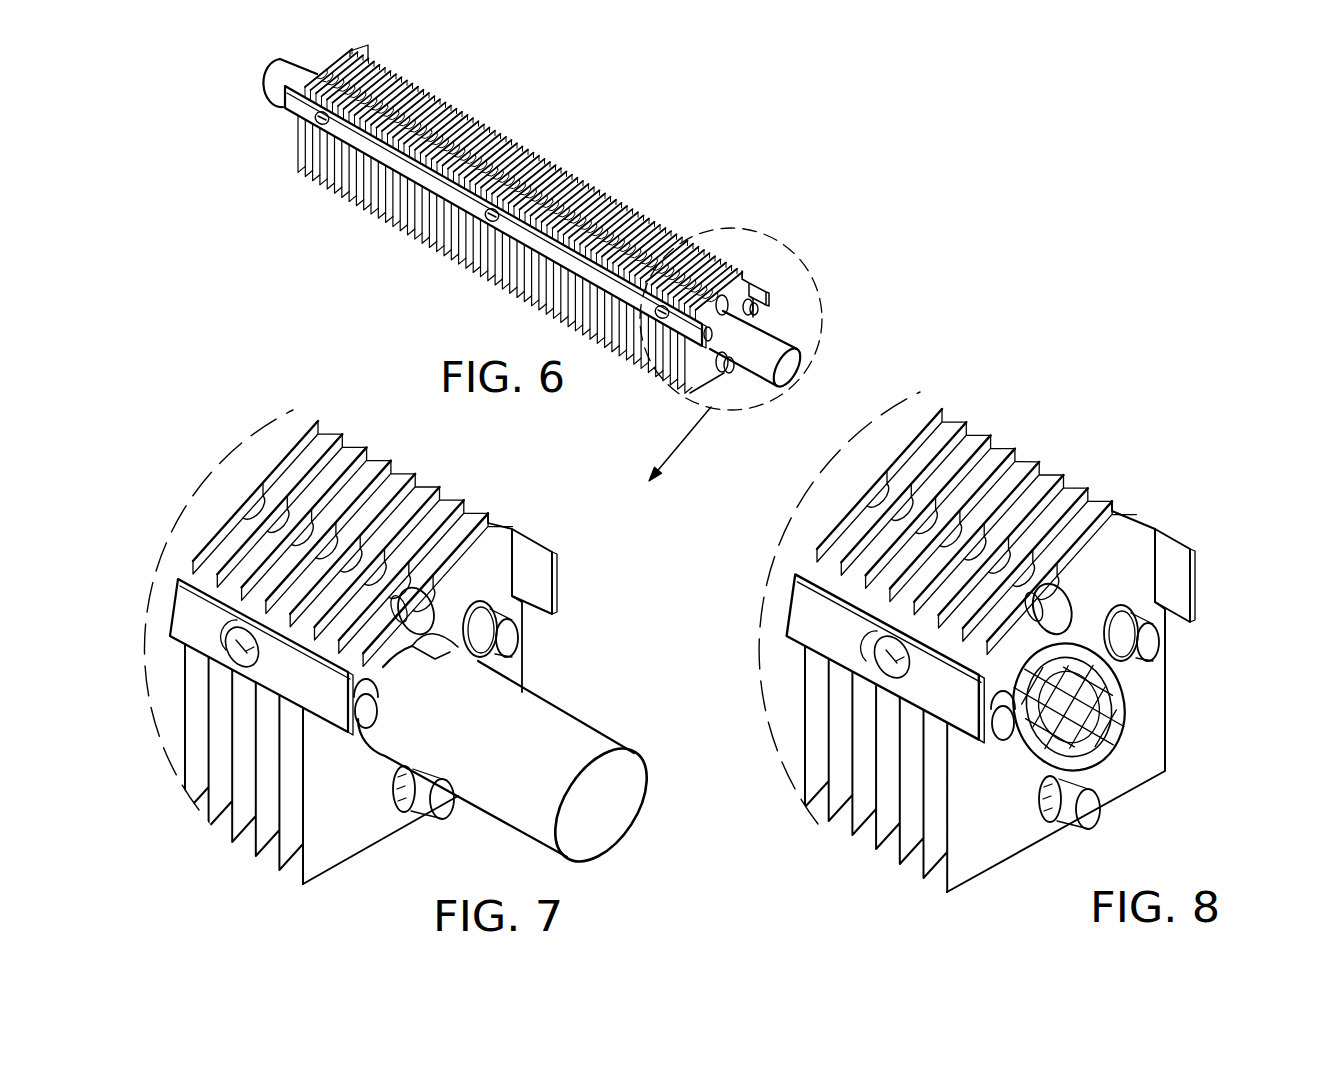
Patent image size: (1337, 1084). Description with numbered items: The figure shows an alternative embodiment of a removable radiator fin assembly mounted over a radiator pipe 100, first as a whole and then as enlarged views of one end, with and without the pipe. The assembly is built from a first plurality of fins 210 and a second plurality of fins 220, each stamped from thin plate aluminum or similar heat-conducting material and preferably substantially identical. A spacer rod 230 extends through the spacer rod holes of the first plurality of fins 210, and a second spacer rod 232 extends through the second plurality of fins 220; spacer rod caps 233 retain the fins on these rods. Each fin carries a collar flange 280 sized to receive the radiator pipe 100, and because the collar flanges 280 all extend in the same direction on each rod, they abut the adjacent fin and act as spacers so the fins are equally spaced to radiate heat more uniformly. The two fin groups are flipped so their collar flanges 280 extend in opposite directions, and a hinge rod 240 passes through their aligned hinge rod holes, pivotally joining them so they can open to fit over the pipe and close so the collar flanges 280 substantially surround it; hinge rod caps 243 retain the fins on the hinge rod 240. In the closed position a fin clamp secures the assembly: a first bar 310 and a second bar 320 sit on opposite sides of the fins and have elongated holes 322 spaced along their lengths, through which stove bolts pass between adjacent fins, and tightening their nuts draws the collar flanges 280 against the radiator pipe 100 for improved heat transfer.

In FIG. 6, the radiator pipe 100 is at (790, 348).
In FIG. 7, the radiator pipe 100 is at (593, 740).
In FIG. 7, the first plurality of fins 210 is at (497, 543).
In FIG. 8, the first plurality of fins 210 is at (1135, 550).
In FIG. 7, the second plurality of fins 220 is at (330, 847).
In FIG. 8, the second plurality of fins 220 is at (967, 853).
In FIG. 7, the spacer rod 230 is at (507, 638).
In FIG. 8, the spacer rod 230 is at (1140, 642).
In FIG. 7, the second spacer rod 232 is at (377, 707).
In FIG. 8, the second spacer rod 232 is at (1001, 733).
In FIG. 7, the spacer rod caps 233 is at (507, 676).
In FIG. 8, the spacer rod caps 233 is at (1020, 741).
In FIG. 7, the hinge rod 240 is at (442, 808).
In FIG. 8, the hinge rod 240 is at (1088, 815).
In FIG. 7, the hinge rod caps 243 is at (477, 826).
In FIG. 8, the hinge rod caps 243 is at (1125, 824).
In FIG. 7, the collar flange 280 is at (440, 647).
In FIG. 8, the collar flange 280 is at (1113, 733).
In FIG. 7, the first bar 310 is at (557, 582).
In FIG. 8, the first bar 310 is at (1193, 577).
In FIG. 7, the second bar 320 is at (190, 628).
In FIG. 8, the second bar 320 is at (812, 623).
In FIG. 7, the elongated holes 322 is at (218, 632).
In FIG. 8, the elongated holes 322 is at (860, 640).